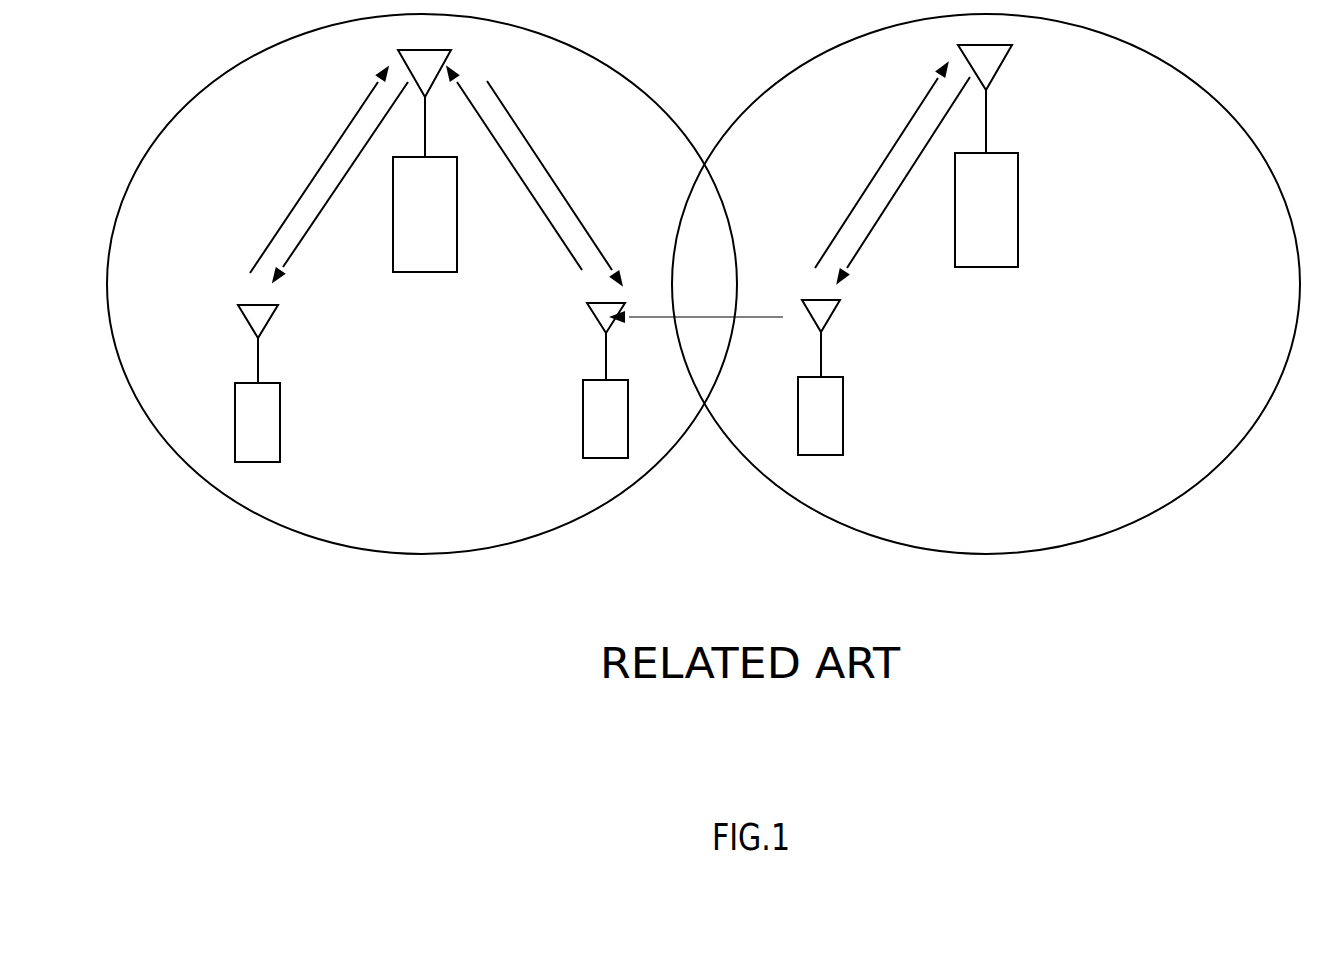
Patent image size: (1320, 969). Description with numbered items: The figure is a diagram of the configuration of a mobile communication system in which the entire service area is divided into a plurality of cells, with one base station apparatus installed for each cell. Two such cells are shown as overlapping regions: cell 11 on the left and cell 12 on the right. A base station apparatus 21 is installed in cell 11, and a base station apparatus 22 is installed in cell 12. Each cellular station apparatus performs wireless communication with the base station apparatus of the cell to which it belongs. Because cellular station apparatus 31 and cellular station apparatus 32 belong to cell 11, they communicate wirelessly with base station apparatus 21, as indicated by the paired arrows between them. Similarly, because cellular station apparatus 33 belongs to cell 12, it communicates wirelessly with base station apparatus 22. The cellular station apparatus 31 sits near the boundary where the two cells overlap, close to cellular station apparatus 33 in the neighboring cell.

The cell 11 is at (626, 78).
The cell 12 is at (1192, 75).
The base station apparatus 21 is at (428, 272).
The base station apparatus 22 is at (990, 267).
The cellular station apparatus 31 is at (590, 459).
The cellular station apparatus 32 is at (258, 462).
The cellular station apparatus 33 is at (823, 455).